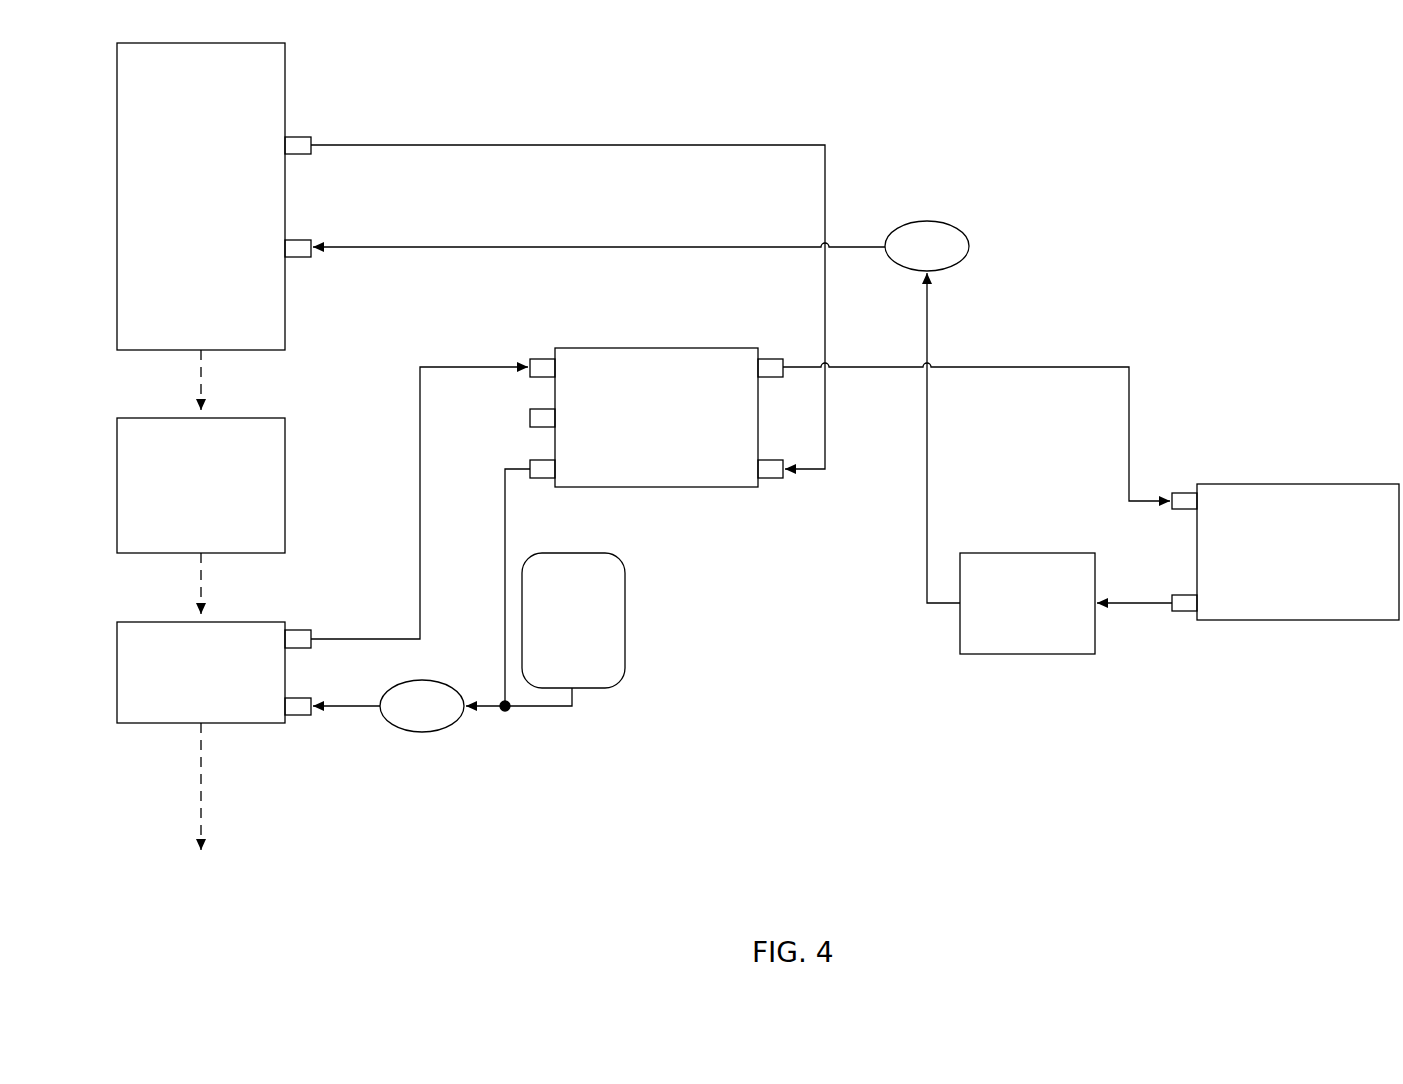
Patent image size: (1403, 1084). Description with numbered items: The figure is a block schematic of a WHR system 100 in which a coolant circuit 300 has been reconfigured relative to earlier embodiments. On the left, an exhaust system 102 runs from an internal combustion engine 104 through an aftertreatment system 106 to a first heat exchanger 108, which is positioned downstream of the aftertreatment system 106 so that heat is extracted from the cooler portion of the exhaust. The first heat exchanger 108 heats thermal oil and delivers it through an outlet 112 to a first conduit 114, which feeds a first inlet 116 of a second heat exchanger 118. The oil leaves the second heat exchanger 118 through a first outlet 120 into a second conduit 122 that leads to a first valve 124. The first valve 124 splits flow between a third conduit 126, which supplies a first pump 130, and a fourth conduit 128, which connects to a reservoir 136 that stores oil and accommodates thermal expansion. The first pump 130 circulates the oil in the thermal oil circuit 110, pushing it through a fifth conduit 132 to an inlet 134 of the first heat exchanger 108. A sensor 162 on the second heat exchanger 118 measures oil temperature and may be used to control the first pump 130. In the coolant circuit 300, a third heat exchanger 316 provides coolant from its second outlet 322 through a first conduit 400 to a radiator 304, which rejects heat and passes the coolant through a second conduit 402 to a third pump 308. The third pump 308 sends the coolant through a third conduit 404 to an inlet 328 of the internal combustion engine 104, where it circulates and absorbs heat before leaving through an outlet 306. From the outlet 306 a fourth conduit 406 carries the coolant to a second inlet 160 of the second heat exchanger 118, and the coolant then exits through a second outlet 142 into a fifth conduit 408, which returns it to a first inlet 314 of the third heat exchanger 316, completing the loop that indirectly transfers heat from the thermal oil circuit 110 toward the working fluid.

The WHR system 100 is at (1335, 126).
The exhaust system 102 is at (165, 808).
The internal combustion engine 104 is at (287, 135).
The aftertreatment system 106 is at (287, 487).
The first heat exchanger 108 is at (150, 723).
The thermal oil circuit 110 is at (450, 353).
The outlet 112 is at (308, 632).
The first conduit 114 is at (418, 487).
The first inlet 116 is at (537, 359).
The second heat exchanger 118 is at (650, 348).
The first outlet 120 is at (540, 479).
The second conduit 122 is at (504, 588).
The first valve 124 is at (512, 710).
The third conduit 126 is at (472, 702).
The fourth conduit 128 is at (562, 710).
The first pump 130 is at (427, 733).
The fifth conduit 132 is at (362, 710).
The inlet 134 is at (305, 717).
The reservoir 136 is at (626, 622).
The second outlet 142 is at (777, 359).
The second inlet 160 is at (775, 480).
The sensor 162 is at (535, 428).
The coolant circuit 300 is at (1068, 316).
The radiator 304 is at (1030, 655).
The outlet 306 is at (313, 154).
The third pump 308 is at (932, 224).
The first inlet 314 is at (1176, 493).
The third heat exchanger 316 is at (1300, 484).
The second outlet 322 is at (1176, 595).
The inlet 328 is at (313, 257).
The first conduit 400 is at (1132, 605).
The second conduit 402 is at (928, 487).
The third conduit 404 is at (597, 247).
The fourth conduit 406 is at (596, 144).
The fifth conduit 408 is at (1005, 367).